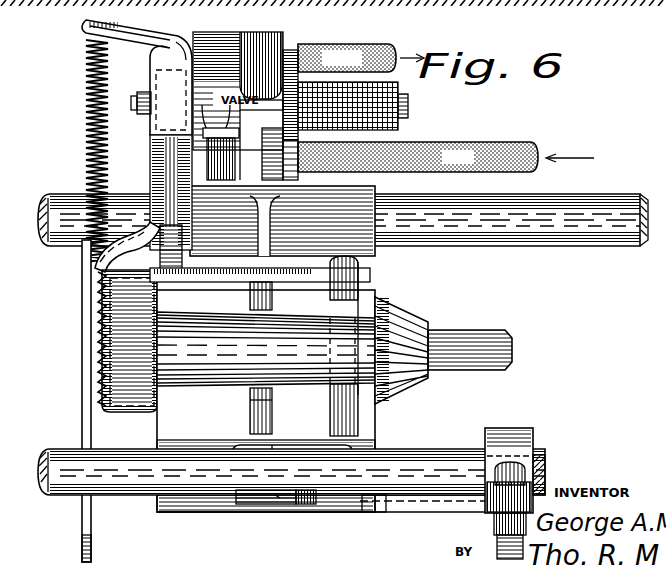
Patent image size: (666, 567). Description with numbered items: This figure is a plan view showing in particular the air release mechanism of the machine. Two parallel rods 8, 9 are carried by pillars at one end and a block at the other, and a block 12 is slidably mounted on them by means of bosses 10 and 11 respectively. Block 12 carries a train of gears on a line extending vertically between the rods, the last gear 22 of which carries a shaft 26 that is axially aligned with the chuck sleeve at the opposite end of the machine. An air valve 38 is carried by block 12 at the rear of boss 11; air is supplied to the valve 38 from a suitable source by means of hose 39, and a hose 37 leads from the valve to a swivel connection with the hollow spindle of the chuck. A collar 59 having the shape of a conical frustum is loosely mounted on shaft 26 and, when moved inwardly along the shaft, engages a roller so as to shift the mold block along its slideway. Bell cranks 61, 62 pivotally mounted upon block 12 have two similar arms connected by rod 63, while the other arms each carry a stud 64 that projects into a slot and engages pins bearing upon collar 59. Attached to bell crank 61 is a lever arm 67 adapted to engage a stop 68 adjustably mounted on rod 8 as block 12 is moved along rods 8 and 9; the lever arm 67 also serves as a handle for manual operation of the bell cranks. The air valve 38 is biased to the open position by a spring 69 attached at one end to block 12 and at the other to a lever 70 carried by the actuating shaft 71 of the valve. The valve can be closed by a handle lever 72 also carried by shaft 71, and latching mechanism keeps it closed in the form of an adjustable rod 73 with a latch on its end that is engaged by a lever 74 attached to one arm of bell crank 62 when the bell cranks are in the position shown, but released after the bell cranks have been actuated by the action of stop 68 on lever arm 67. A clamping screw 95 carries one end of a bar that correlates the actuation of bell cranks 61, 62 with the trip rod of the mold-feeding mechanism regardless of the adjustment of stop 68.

The rod 8 is at (446, 466).
The rod 9 is at (512, 230).
The boss 10 is at (182, 498).
The boss 11 is at (360, 205).
The block 12 is at (200, 420).
The gear 22 is at (98, 362).
The shaft 26 is at (466, 330).
The hose 37 is at (372, 46).
The air valve 38 is at (268, 46).
The hose 39 is at (470, 143).
The collar 59 is at (402, 318).
The bell crank 61 is at (298, 455).
The bell crank 62 is at (320, 272).
The rod 63 is at (348, 412).
The stud 64 is at (252, 298).
The lever arm 67 is at (252, 506).
The stop 68 is at (404, 510).
The spring 69 is at (86, 98).
The lever 70 is at (138, 30).
The actuating shaft 71 is at (136, 96).
The handle lever 72 is at (82, 406).
The adjustable rod 73 is at (96, 262).
The lever 74 is at (207, 278).
The clamping screw 95 is at (494, 546).